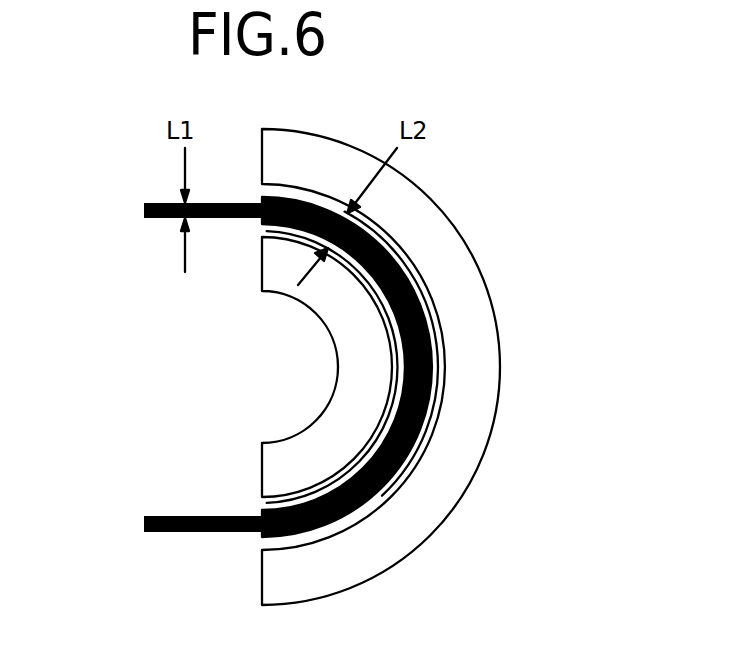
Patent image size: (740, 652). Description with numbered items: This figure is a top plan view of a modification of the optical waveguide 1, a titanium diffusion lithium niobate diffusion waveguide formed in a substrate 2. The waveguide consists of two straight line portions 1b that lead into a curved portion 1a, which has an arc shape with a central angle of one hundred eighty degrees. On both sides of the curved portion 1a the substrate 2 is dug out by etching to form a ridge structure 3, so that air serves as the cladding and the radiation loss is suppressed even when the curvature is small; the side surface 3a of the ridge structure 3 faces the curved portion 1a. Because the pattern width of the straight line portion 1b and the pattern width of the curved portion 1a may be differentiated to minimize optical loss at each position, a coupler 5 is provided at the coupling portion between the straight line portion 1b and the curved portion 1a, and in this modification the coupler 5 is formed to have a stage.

The optical waveguide 1 is at (272, 354).
The curved portion 1a is at (380, 494).
The straight line portion 1b is at (146, 190).
The substrate 2 is at (109, 378).
The ridge structure 3 is at (420, 277).
The side surface 3a is at (388, 345).
The coupler 5 is at (258, 224).